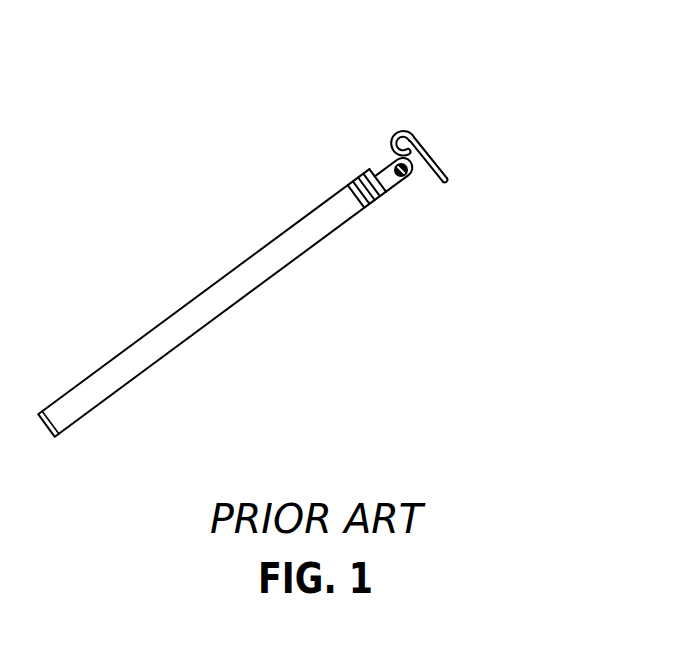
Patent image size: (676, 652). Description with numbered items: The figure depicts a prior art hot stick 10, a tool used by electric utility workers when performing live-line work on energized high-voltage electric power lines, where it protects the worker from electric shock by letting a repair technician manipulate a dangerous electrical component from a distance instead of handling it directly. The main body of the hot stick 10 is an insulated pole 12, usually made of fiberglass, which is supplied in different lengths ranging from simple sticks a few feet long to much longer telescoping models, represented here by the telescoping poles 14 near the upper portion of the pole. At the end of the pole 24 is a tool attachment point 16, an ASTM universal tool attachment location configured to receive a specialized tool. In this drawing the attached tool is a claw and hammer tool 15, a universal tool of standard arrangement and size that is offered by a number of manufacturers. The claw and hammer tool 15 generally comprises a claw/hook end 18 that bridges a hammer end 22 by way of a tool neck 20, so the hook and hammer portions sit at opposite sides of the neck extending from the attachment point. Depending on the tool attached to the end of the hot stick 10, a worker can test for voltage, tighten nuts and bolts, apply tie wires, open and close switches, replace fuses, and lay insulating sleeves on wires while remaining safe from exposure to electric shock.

The hot stick 10 is at (263, 24).
The insulated pole 12 is at (213, 323).
The telescoping poles 14 is at (344, 192).
The claw and hammer tool 15 is at (456, 135).
The tool attachment point 16 is at (395, 160).
The claw/hook end 18 is at (404, 130).
The tool neck 20 is at (434, 174).
The hammer end 22 is at (478, 182).
The end of the pole 24 is at (398, 228).